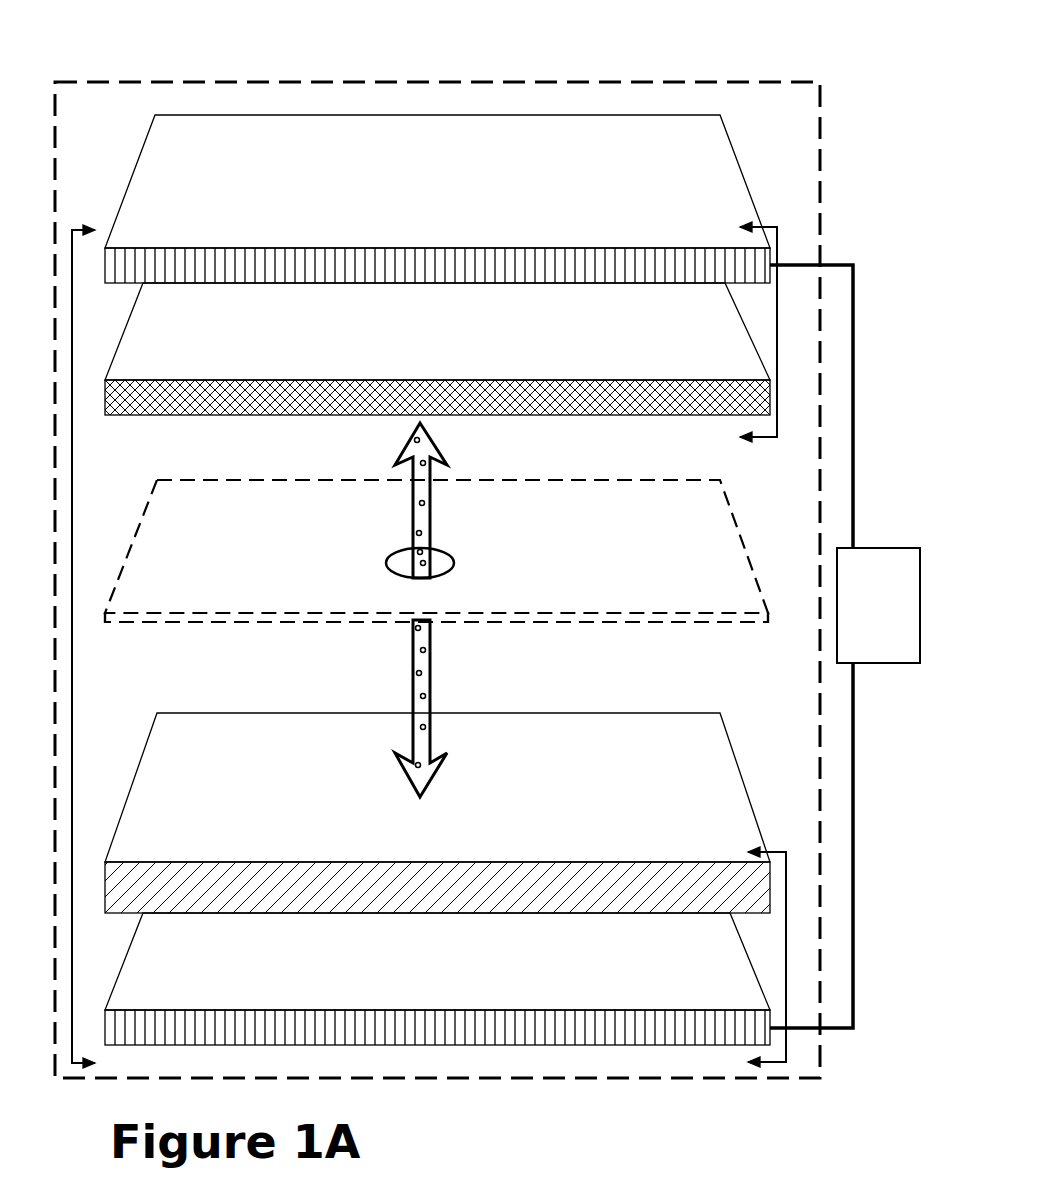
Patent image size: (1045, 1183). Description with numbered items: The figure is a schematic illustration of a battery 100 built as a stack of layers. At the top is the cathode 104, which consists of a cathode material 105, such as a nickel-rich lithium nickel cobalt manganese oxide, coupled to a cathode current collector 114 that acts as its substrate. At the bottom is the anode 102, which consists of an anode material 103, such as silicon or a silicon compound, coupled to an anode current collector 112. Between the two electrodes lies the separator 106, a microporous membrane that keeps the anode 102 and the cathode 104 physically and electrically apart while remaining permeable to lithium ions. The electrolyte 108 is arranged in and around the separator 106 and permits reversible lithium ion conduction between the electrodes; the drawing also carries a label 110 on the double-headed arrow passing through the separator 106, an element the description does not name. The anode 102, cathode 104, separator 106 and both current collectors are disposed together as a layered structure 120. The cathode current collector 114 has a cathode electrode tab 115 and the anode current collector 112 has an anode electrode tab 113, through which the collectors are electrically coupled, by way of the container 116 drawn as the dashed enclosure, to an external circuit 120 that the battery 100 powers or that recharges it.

The battery 100 is at (658, 65).
The anode 102 is at (434, 890).
The anode material 103 is at (255, 846).
The cathode 104 is at (435, 278).
The cathode material 105 is at (257, 364).
The separator 106 is at (235, 596).
The electrolyte 108 is at (283, 449).
The ion flow arrow 110 is at (431, 684).
The anode current collector 112 is at (221, 1001).
The anode electrode tab 113 is at (837, 1032).
The cathode current collector 114 is at (221, 239).
The cathode electrode tab 115 is at (837, 263).
The container 116 is at (237, 80).
The external circuit 120 is at (911, 626).